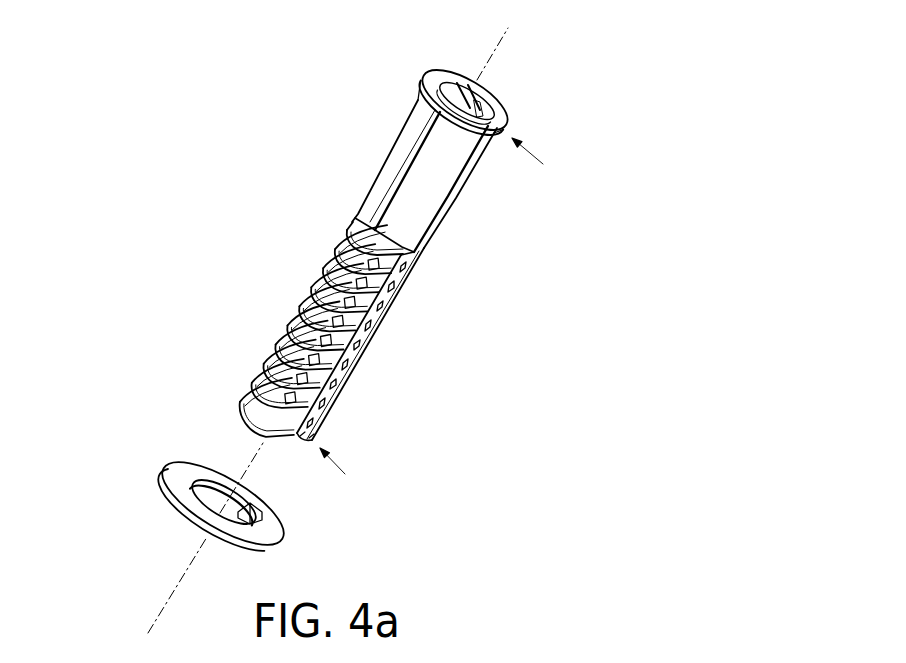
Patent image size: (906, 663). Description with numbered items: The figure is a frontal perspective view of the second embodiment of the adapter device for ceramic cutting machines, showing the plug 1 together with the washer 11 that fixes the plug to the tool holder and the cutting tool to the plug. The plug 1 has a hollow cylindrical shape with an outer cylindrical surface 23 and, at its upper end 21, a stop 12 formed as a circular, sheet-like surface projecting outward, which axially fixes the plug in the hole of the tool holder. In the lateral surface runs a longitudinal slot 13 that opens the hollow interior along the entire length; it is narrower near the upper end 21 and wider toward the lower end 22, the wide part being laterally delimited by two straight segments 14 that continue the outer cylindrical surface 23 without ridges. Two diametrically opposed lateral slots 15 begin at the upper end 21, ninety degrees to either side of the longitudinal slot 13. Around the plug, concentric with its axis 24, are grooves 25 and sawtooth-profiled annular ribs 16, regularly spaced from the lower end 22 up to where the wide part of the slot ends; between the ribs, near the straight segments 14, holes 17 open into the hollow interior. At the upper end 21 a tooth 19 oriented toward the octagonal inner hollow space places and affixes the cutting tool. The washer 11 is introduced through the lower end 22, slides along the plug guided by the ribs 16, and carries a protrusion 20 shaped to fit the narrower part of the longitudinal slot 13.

The plug 1 is at (240, 202).
The washer 11 is at (116, 436).
The stop 12 is at (438, 74).
The longitudinal slot 13 is at (407, 290).
The straight segments 14 is at (391, 335).
The lateral slots 15 is at (397, 178).
The annular ribs 16 is at (279, 345).
The holes 17 is at (357, 368).
The tooth 19 is at (490, 117).
The protrusion 20 is at (257, 518).
The upper end 21 is at (544, 165).
The lower end 22 is at (350, 473).
The outer cylindrical surface 23 is at (420, 200).
The axis 24 is at (515, 42).
The grooves 25 is at (246, 393).